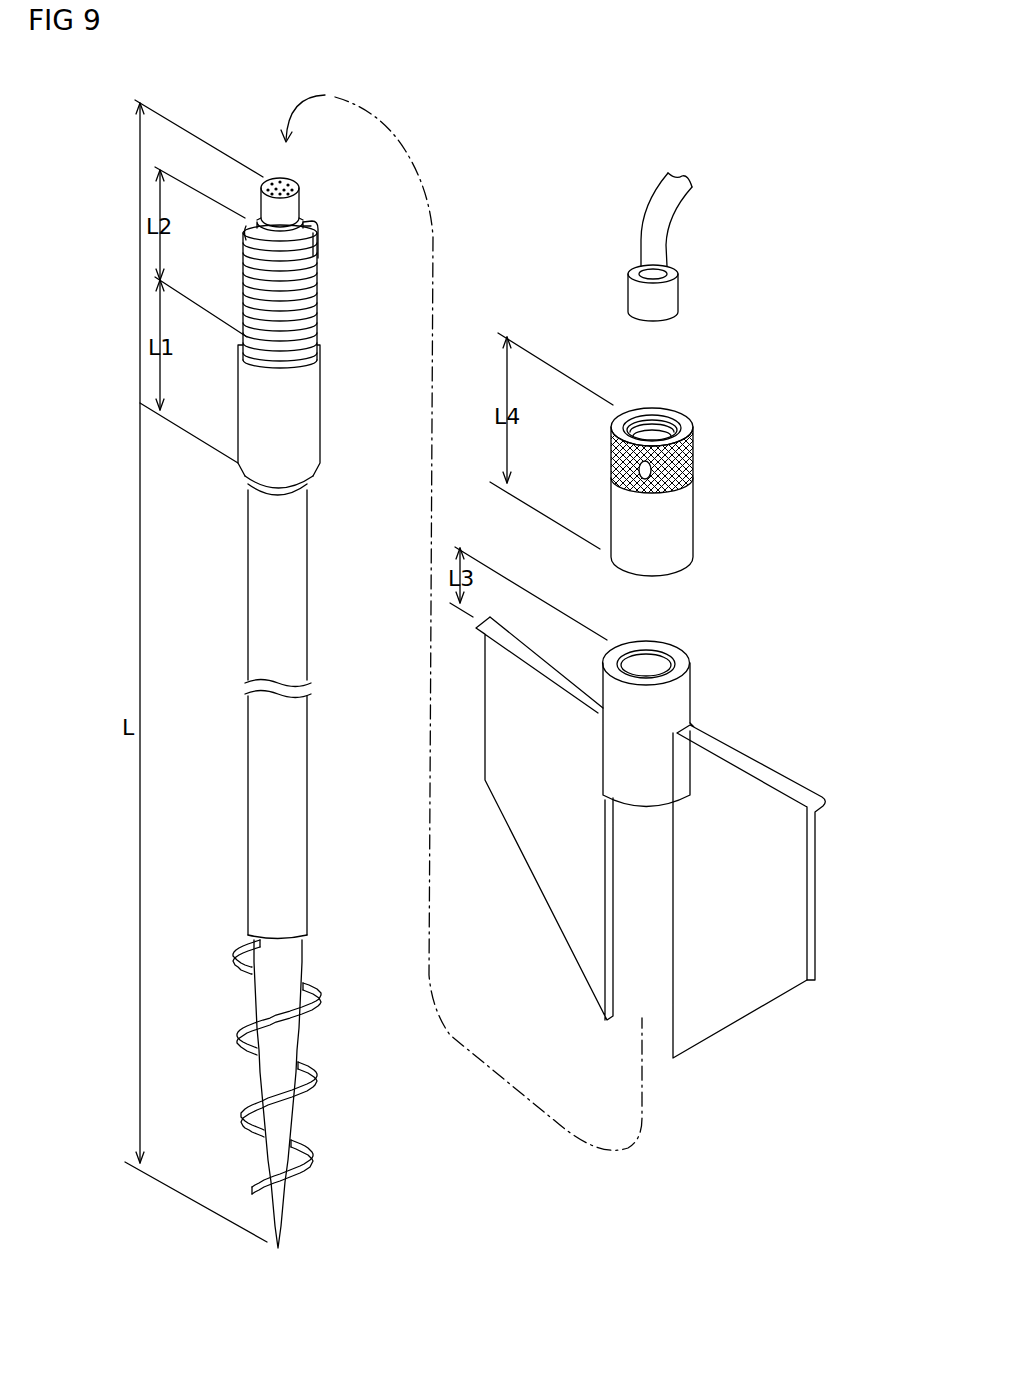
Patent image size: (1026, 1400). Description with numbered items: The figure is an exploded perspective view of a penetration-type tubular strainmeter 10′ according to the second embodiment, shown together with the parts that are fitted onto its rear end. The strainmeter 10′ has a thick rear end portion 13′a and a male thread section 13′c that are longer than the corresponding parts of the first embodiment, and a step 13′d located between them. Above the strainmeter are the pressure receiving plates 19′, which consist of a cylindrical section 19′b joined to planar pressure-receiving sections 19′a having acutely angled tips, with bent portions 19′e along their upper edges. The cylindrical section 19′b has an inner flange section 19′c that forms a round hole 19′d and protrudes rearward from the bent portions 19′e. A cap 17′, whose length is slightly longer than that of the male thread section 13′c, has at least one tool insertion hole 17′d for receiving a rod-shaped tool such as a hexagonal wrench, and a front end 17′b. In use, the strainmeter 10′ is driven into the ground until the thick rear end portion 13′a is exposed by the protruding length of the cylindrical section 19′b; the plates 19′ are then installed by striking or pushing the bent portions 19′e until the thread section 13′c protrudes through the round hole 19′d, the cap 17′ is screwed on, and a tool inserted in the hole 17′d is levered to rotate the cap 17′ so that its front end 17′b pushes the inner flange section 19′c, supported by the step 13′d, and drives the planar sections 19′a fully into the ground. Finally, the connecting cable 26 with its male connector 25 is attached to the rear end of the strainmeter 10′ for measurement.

The penetration-type tubular strainmeter 10′ is at (231, 585).
The thick rear end portion 13′a is at (246, 383).
The male thread section 13′c is at (246, 244).
The step 13′d is at (305, 366).
The connecting cable 26 is at (648, 212).
The male connector 25 is at (628, 292).
The cap 17′ is at (694, 455).
The tool insertion hole 17′d is at (694, 488).
The front end of the cap 17′b is at (682, 577).
The pressure receiving plates 19′ is at (832, 895).
The inner flange section 19′c is at (690, 665).
The round hole 19′d is at (655, 660).
The cylindrical section 19′b is at (667, 765).
The planar pressure-receiving sections 19′a is at (535, 878).
The bent portions 19′e is at (805, 778).